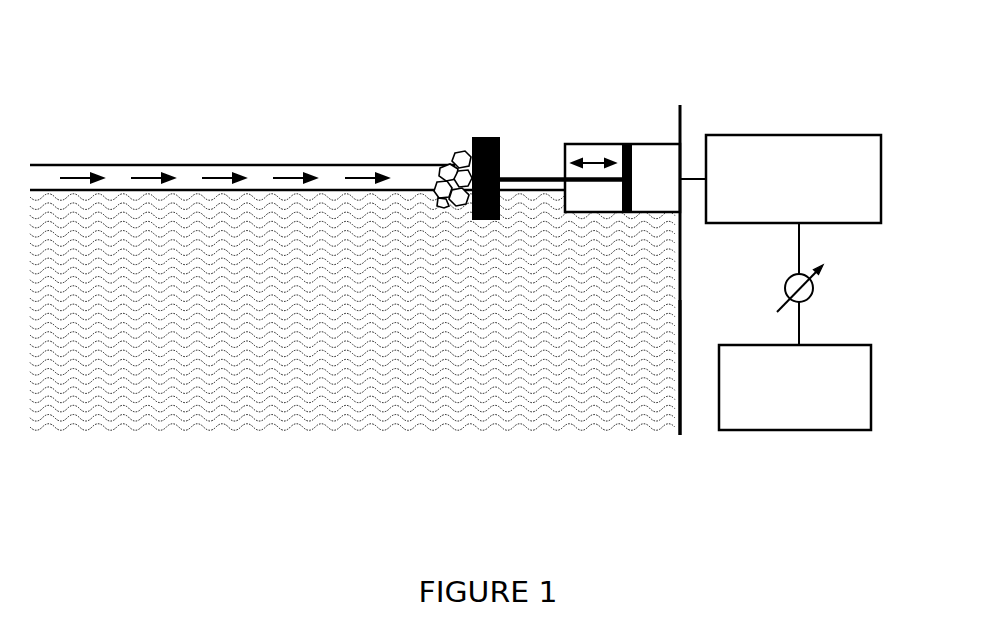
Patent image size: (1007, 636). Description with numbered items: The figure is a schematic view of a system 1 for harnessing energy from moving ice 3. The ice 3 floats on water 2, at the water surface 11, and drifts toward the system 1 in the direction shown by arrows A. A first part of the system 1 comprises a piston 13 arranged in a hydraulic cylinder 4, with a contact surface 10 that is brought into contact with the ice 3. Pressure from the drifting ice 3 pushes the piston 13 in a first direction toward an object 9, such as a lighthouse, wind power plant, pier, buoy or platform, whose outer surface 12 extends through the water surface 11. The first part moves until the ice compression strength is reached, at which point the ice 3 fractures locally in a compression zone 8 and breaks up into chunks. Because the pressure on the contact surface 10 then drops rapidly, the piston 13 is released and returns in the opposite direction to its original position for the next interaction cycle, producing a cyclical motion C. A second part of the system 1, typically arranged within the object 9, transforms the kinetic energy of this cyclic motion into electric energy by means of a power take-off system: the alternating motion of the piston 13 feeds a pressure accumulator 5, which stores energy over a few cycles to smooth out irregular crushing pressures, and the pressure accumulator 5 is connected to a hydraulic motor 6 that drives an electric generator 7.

The system 1 is at (790, 112).
The water 2 is at (608, 412).
The ice 3 is at (86, 165).
The hydraulic cylinder 4 is at (643, 143).
The pressure accumulator 5 is at (750, 158).
The hydraulic motor 6 is at (815, 292).
The electric generator 7 is at (833, 392).
The compression zone 8 is at (447, 165).
The object 9 is at (678, 128).
The contact surface 10 is at (470, 153).
The water surface 11 is at (540, 190).
The outer surface 12 is at (682, 415).
The piston 13 is at (550, 177).
The direction of moving ice A is at (218, 176).
The cyclical motion C is at (591, 163).